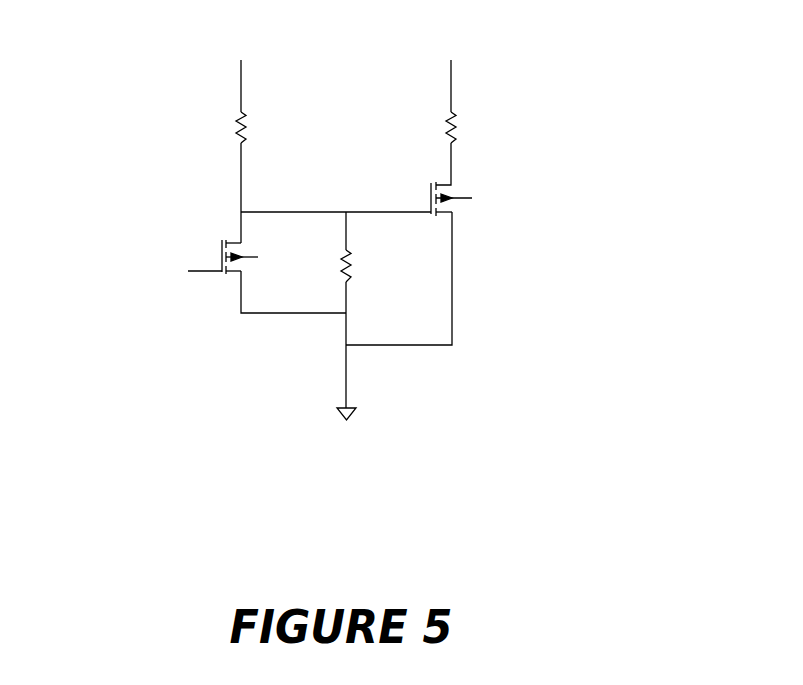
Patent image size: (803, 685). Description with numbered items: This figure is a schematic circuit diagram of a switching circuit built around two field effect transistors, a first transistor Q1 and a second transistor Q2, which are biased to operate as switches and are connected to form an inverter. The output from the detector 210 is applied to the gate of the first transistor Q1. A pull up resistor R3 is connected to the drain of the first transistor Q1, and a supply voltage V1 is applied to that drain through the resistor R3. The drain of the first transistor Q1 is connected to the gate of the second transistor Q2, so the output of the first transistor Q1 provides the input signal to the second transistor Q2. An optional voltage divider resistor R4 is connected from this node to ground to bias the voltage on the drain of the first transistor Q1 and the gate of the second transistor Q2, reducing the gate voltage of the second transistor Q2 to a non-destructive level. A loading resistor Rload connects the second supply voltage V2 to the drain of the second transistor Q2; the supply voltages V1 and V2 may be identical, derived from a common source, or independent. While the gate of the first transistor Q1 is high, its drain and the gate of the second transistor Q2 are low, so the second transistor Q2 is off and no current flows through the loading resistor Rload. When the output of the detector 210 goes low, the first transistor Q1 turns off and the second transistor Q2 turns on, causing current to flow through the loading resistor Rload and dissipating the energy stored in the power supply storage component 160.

The power supply storage component 160 is at (518, 132).
The detector 210 is at (112, 270).
The pull up resistor R3 is at (252, 127).
The voltage divider resistor R4 is at (356, 266).
The loading resistor Rload is at (430, 127).
The first transistor Q1 is at (240, 256).
The second transistor Q2 is at (442, 199).
The supply voltage V1 is at (241, 77).
The supply voltage V2 is at (451, 77).